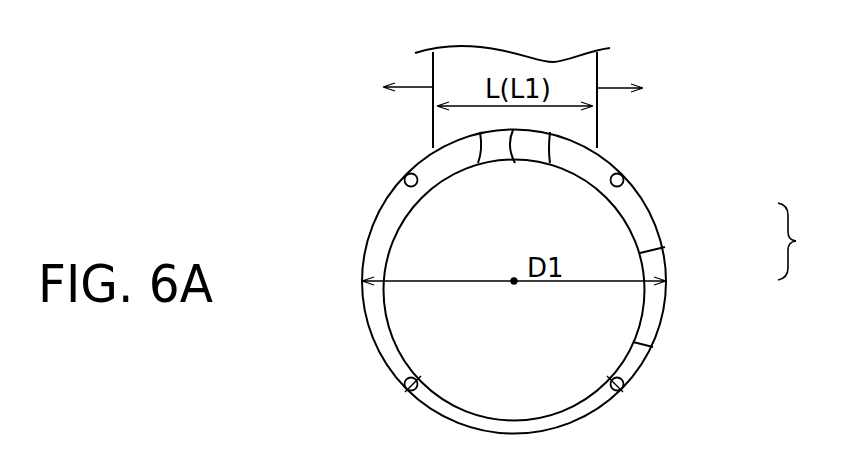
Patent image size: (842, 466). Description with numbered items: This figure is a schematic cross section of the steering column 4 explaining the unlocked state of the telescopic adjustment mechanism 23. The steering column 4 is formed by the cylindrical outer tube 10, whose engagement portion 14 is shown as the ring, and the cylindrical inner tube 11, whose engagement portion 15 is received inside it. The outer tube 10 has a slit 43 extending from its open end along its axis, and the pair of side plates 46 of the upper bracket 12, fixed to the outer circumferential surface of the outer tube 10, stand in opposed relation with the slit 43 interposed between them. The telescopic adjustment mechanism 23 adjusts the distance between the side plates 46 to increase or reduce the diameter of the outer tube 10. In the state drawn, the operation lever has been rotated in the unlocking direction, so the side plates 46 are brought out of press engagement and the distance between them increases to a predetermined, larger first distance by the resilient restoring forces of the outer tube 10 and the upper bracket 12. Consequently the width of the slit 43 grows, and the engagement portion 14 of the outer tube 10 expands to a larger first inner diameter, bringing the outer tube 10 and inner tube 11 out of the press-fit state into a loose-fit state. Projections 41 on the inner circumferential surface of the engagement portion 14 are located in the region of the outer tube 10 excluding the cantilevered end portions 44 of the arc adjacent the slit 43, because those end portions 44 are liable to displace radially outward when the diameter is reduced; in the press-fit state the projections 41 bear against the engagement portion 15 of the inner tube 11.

The steering column 4 is at (799, 241).
The outer tube 10 is at (647, 205).
The inner tube 11 is at (665, 245).
The upper bracket 12 is at (613, 73).
The engagement portion of the outer tube 14 is at (667, 315).
The engagement portion of the inner tube 15 is at (653, 347).
The telescopic adjustment mechanism 23 is at (724, 134).
The projections 41 is at (408, 176).
The slit 43 is at (515, 163).
The end portions of the arc 44 is at (478, 163).
The side plates 46 is at (433, 135).